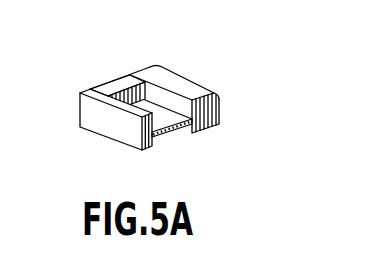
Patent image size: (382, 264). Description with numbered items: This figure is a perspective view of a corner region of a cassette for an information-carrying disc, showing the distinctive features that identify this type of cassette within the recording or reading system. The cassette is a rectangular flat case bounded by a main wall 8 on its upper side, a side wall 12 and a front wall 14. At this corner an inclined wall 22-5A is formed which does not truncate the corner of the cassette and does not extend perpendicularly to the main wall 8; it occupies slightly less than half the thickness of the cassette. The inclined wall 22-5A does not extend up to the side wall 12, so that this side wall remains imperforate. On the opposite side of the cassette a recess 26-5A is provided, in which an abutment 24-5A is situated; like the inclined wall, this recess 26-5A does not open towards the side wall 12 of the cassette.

The main wall 8 is at (198, 82).
The side wall 12 is at (100, 120).
The front wall 14 is at (223, 110).
The inclined wall 22-5A is at (172, 131).
The abutment 24-5A is at (101, 87).
The recess 26-5A is at (151, 101).